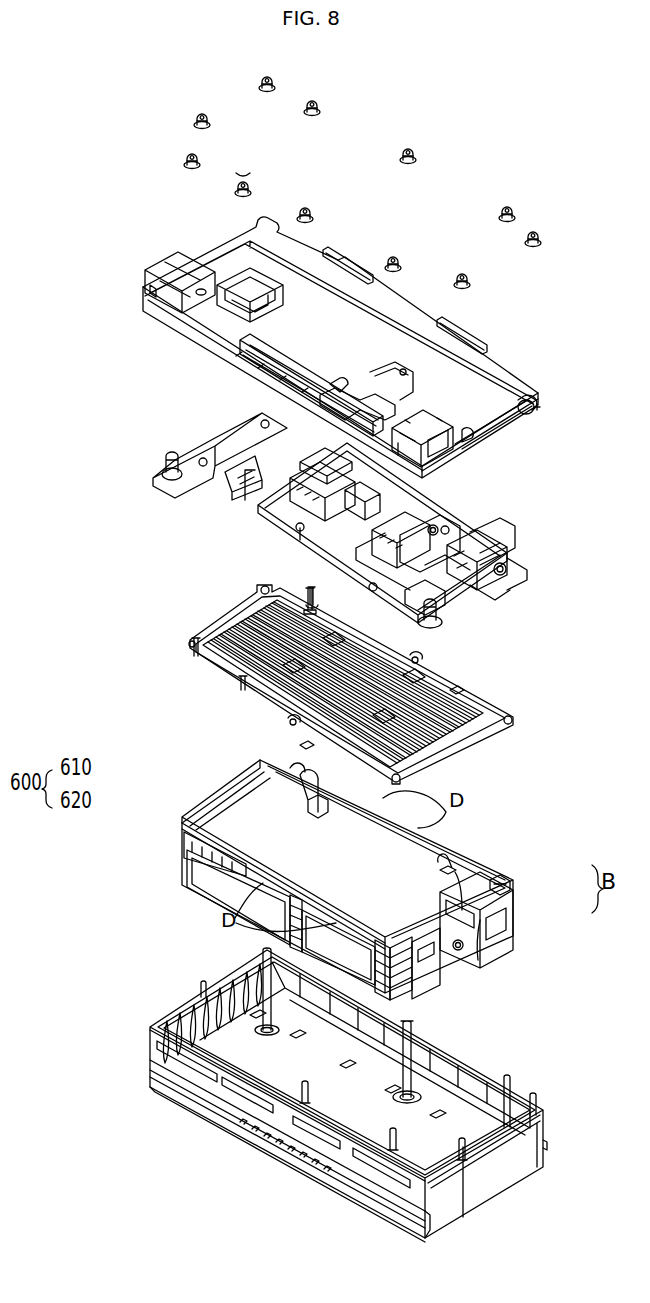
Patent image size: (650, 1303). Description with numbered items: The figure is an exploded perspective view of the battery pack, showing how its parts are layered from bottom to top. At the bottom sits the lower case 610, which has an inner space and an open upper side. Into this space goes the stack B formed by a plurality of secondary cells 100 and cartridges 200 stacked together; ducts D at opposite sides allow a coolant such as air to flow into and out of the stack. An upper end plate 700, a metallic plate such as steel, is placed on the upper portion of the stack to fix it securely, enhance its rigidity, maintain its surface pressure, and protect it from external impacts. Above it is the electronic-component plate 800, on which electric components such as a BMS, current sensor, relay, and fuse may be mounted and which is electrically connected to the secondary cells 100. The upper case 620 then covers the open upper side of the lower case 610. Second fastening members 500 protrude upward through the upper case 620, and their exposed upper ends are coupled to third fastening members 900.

The secondary cell 100 is at (522, 884).
The cartridge 200 is at (522, 918).
The second fastening member 500 is at (413, 1050).
The lower case 610 is at (160, 981).
The upper case 620 is at (156, 256).
The upper end plate 700 is at (174, 608).
The electronic-component plate 800 is at (156, 434).
The third fastening member 900 is at (261, 80).